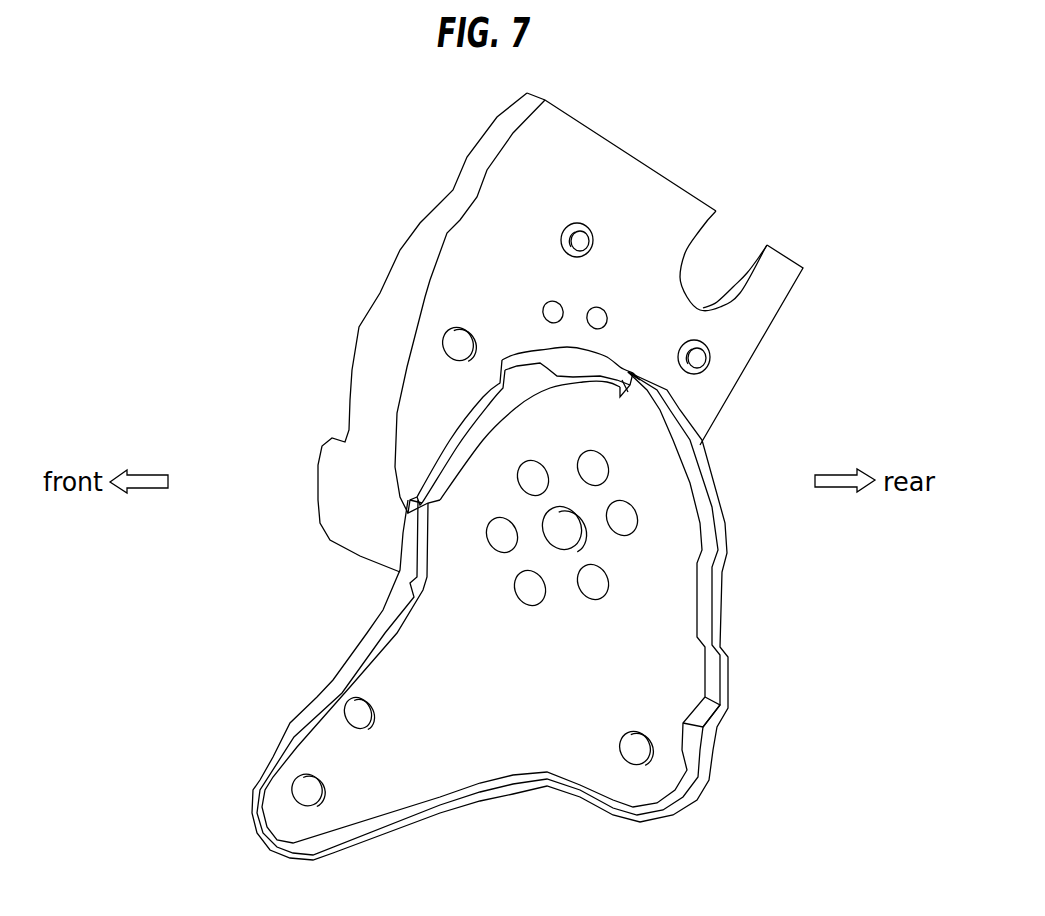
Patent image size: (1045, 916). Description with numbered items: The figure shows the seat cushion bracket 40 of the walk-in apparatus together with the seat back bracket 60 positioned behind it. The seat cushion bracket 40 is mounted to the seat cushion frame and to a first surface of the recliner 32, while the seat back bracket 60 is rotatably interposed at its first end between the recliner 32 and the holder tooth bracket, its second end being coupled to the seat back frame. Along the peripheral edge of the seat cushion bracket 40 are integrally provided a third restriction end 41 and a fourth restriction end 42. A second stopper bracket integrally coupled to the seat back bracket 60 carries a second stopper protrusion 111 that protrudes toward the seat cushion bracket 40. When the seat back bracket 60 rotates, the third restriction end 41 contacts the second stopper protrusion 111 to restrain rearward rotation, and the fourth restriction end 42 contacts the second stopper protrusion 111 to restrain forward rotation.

The second stopper protrusion 111 is at (567, 360).
The seat back bracket 60 is at (397, 307).
The recliner 32 is at (458, 440).
The fourth restriction end 42 is at (417, 497).
The third restriction end 41 is at (613, 363).
The seat cushion bracket 40 is at (500, 730).